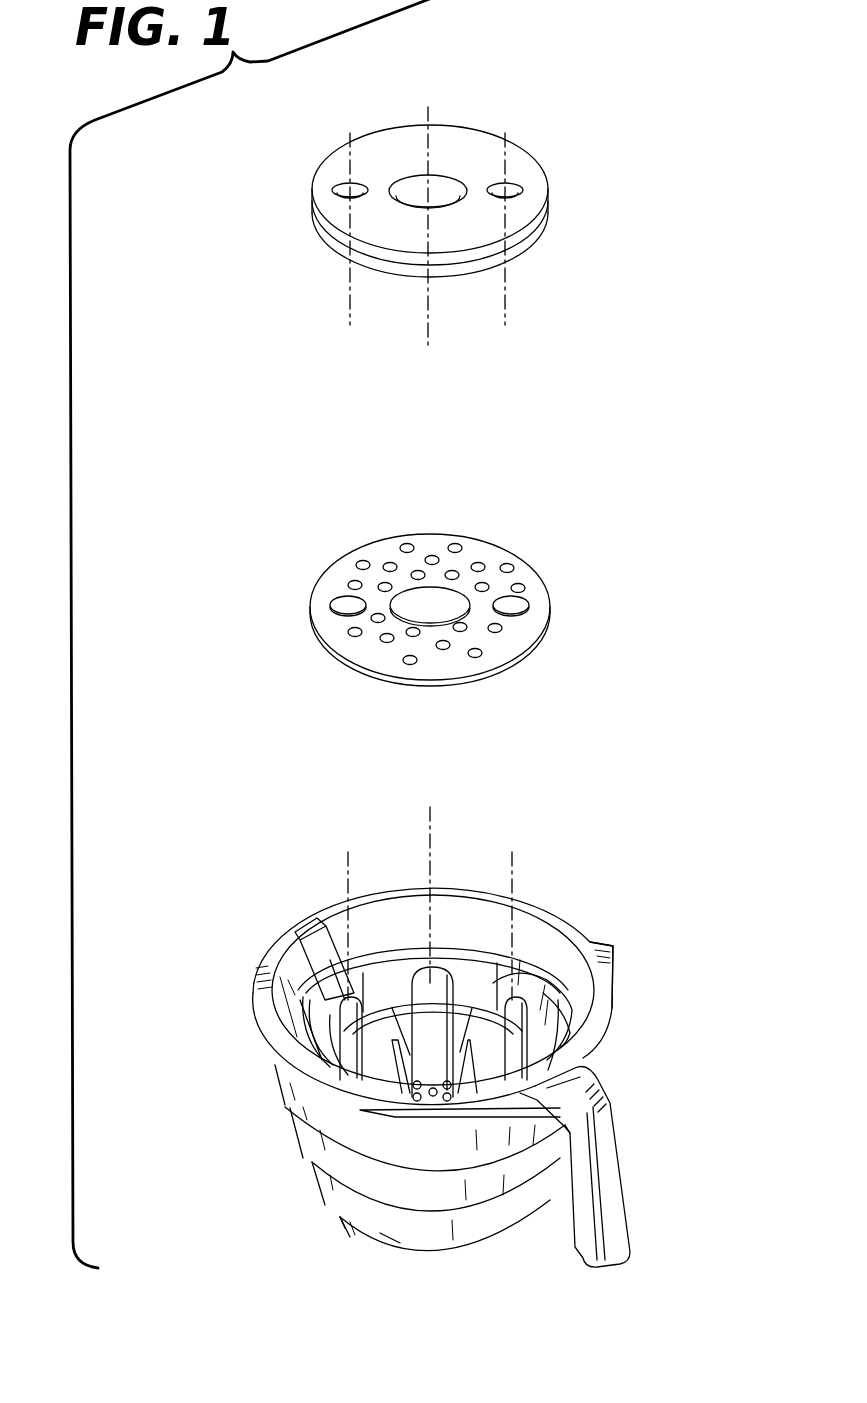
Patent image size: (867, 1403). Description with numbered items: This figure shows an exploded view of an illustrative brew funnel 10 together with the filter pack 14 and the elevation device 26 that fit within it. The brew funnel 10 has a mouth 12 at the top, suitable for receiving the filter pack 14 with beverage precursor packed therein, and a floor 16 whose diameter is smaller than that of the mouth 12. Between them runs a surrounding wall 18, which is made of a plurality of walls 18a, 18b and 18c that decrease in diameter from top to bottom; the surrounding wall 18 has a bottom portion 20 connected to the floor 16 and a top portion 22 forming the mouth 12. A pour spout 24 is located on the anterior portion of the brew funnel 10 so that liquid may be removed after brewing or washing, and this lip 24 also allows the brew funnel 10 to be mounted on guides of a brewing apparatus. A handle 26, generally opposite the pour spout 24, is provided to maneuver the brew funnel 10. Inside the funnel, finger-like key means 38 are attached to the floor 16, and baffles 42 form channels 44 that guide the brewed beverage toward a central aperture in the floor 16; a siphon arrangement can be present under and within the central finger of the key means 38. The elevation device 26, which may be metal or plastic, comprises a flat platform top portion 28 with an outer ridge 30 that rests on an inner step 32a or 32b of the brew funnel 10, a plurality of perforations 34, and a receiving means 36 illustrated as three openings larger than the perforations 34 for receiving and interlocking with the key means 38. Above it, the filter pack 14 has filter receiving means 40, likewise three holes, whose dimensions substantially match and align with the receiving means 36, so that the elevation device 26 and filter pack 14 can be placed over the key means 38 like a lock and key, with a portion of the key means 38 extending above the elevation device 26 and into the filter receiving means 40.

The brew funnel 10 is at (433, 1049).
The mouth 12 is at (400, 1094).
The filter pack 14 is at (419, 207).
The floor 16 is at (345, 1225).
The surrounding wall 18 is at (400, 1190).
The wall 18a is at (428, 1235).
The wall 18b is at (478, 1185).
The wall 18c is at (505, 1143).
The bottom portion 20 is at (380, 1233).
The top portion 22 is at (265, 1057).
The pour spout 24 is at (320, 912).
The handle 26 is at (469, 865).
The top portion 28 is at (450, 586).
The outer ridge 30 is at (455, 677).
The inner step 32a is at (512, 977).
The inner step 32b is at (538, 978).
The perforations 34 is at (507, 568).
The receiving means 36 is at (493, 613).
The key means 38 is at (437, 985).
The filter receiving means 40 is at (492, 201).
The baffles 42 is at (476, 1073).
The channels 44 is at (478, 1072).